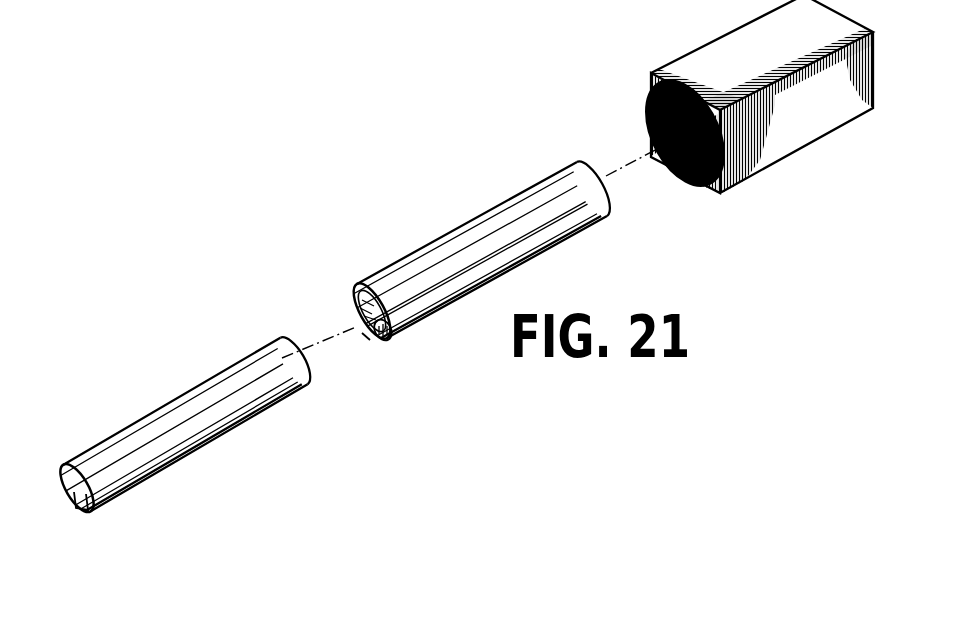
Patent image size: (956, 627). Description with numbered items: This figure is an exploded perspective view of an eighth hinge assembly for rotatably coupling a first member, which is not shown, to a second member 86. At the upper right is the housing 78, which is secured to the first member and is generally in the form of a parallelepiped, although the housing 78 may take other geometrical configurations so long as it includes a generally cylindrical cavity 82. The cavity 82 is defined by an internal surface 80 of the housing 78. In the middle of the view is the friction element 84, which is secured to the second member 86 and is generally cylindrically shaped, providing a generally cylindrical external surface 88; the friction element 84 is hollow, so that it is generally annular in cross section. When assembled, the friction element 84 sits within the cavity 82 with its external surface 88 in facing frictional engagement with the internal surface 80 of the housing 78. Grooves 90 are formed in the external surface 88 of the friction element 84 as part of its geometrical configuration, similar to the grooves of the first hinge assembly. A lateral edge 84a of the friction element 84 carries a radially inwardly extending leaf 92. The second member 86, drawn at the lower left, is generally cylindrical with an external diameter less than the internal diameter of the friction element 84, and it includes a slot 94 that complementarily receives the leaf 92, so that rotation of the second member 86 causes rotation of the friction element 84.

The housing 78 is at (782, 143).
The internal surface 80 is at (690, 150).
The cylindrical cavity 82 is at (672, 128).
The friction element 84 is at (352, 287).
The lateral edge 84a is at (373, 340).
The second member 86 is at (175, 452).
The external surface 88 is at (477, 253).
The grooves 90 is at (460, 272).
The leaf 92 is at (362, 333).
The slot 94 is at (79, 500).